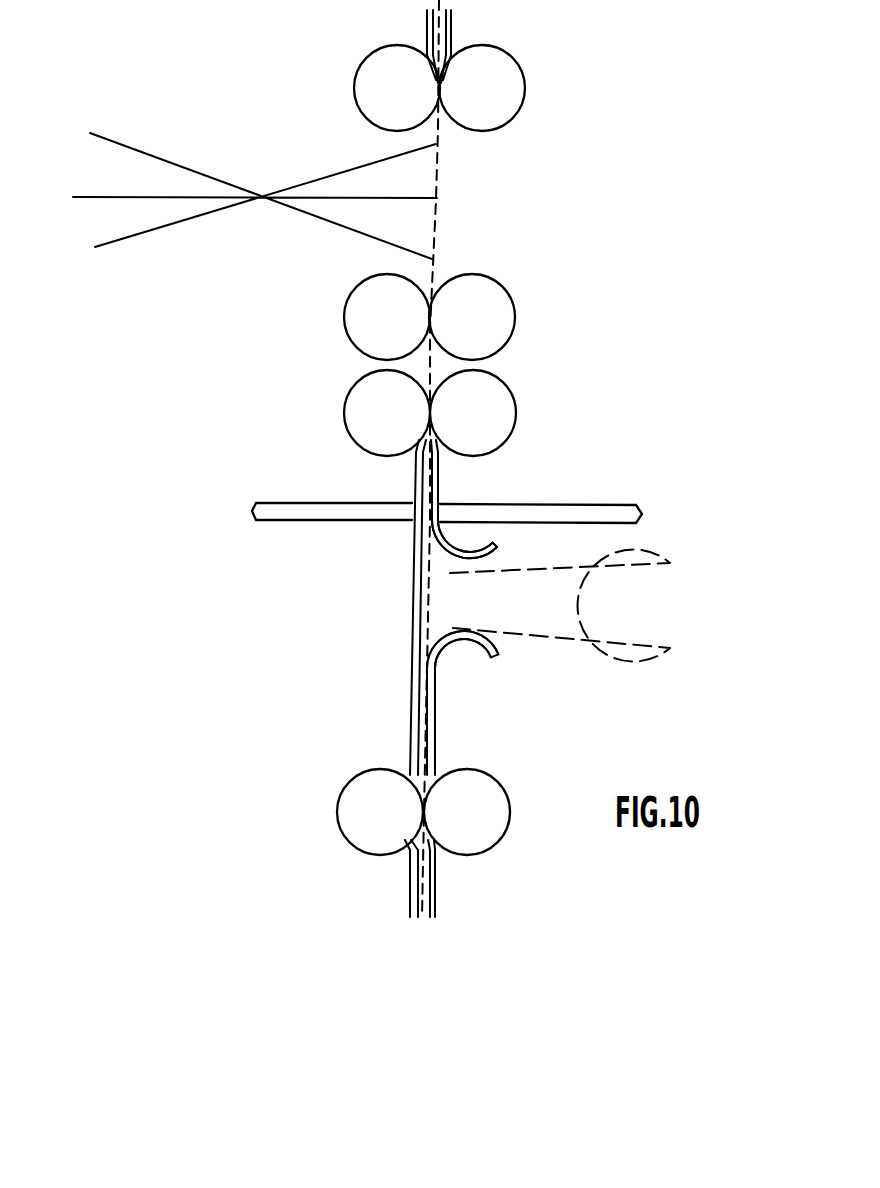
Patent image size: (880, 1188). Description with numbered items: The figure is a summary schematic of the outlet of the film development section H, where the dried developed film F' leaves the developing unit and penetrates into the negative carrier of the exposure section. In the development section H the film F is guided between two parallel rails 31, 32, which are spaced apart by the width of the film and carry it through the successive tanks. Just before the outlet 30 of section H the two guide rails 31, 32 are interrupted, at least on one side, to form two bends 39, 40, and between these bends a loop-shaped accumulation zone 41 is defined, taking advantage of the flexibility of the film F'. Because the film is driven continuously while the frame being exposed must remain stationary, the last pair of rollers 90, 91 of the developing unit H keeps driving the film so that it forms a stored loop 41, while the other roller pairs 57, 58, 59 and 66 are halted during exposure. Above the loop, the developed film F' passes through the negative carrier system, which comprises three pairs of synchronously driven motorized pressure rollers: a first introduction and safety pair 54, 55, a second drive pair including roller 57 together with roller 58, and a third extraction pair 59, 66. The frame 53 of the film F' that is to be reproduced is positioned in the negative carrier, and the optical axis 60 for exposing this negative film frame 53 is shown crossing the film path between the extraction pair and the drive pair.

The loop-shaped accumulation zone 41 is at (452, 15).
The extraction roller 66 is at (368, 87).
The extraction roller 59 is at (513, 102).
The optical axis 60 is at (197, 197).
The frame of the film 53 is at (437, 185).
The pressure roller 58 is at (365, 305).
The drive roller 57 is at (498, 310).
The introduction and safety roller 54 is at (363, 405).
The introduction and safety roller 55 is at (498, 413).
The outlet 30 is at (440, 478).
The bend 39 is at (498, 552).
The bend 40 is at (502, 656).
The guide rail 31 is at (413, 720).
The guide rail 32 is at (432, 720).
The roller 90 is at (352, 820).
The roller 91 is at (492, 822).
The film development section H is at (352, 600).
The film F is at (749, 538).
The developed film F' is at (441, 599).